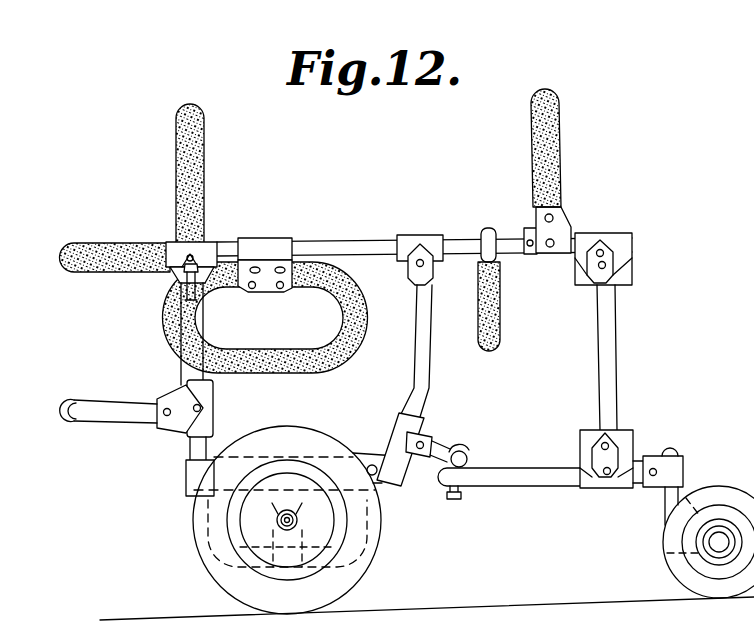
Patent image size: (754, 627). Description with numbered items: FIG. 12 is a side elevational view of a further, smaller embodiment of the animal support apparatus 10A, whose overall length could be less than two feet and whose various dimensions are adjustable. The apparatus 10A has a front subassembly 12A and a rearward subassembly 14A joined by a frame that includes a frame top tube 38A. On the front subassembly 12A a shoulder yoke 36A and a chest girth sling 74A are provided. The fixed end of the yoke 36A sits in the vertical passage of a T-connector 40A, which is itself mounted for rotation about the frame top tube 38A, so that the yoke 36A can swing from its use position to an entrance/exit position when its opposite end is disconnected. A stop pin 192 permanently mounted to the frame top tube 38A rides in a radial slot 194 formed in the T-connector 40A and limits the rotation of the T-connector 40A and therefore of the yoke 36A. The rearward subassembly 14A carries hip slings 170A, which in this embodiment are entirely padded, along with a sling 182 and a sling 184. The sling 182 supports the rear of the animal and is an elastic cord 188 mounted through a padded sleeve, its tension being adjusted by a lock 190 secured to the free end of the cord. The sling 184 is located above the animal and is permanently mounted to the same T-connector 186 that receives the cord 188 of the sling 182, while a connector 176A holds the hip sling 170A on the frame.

The apparatus 10A is at (581, 98).
The front subassembly 12A is at (633, 366).
The rearward subassembly 14A is at (163, 462).
The shoulder yoke 36A is at (553, 153).
The frame top tube 38A is at (453, 242).
The T-connector 40A is at (562, 240).
The chest girth sling 74A is at (500, 340).
The hip sling 170A is at (305, 362).
The clamp block 176A is at (262, 254).
The sling 182 is at (125, 227).
The sling 184 is at (178, 123).
The T-connector 186 is at (208, 250).
The cord 188 is at (189, 298).
The lock 190 is at (183, 271).
The stop pin 192 is at (537, 254).
The radial slot 194 is at (528, 233).